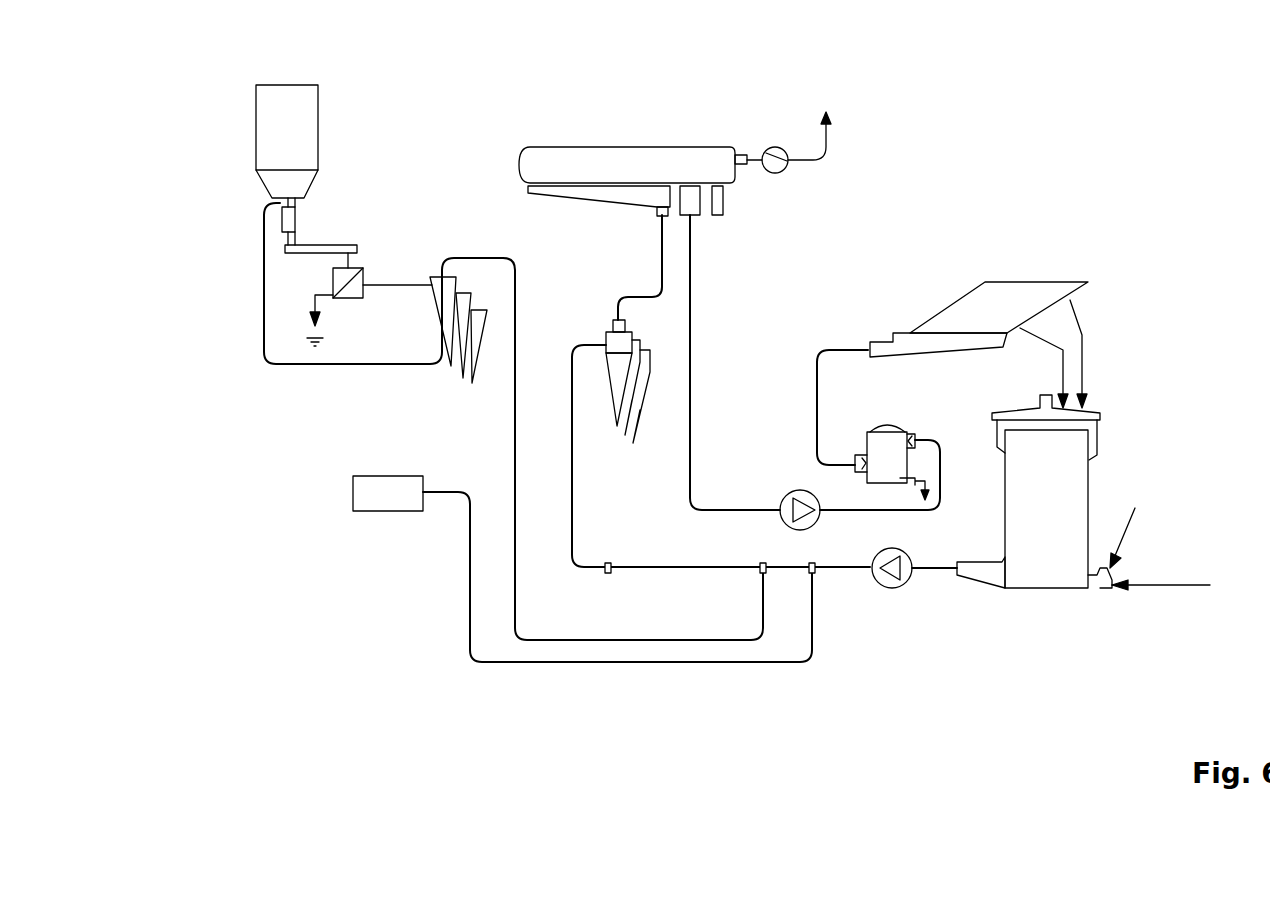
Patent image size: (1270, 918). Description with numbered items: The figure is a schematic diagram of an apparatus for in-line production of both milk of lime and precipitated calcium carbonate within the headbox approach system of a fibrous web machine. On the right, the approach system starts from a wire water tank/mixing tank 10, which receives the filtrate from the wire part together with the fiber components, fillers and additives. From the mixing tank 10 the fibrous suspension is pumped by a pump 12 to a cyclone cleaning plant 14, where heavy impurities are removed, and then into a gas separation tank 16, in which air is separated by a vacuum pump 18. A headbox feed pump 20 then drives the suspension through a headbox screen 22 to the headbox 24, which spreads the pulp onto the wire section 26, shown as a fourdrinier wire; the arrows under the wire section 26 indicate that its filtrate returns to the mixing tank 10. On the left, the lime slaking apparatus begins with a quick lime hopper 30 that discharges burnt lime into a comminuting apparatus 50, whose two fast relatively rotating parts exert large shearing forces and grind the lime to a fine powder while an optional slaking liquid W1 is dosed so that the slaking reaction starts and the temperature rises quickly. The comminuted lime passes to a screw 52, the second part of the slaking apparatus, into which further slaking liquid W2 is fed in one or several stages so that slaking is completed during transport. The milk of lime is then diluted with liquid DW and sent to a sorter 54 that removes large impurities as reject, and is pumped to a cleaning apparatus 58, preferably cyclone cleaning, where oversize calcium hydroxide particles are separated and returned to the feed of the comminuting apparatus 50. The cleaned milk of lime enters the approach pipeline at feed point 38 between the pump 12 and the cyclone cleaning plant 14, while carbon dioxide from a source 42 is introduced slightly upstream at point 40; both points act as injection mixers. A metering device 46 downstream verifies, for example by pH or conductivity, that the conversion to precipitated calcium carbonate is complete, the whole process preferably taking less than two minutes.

The wire water tank/mixing tank 10 is at (1048, 544).
The pump 12 is at (893, 577).
The cyclone cleaning plant 14 is at (616, 343).
The gas separation tank 16 is at (572, 172).
The vacuum pump 18 is at (770, 168).
The headbox feed pump 20 is at (792, 508).
The headbox screen 22 is at (880, 455).
The headbox 24 is at (923, 340).
The wire section 26 is at (990, 310).
The quick lime hopper 30 is at (274, 141).
The milk of lime feed point 38 is at (762, 575).
The carbon dioxide introduction point 40 is at (811, 575).
The carbon dioxide source 42 is at (374, 505).
The metering device 46 is at (606, 574).
The comminuting apparatus 50 is at (282, 220).
The screw 52 is at (313, 250).
The sorter 54 is at (343, 283).
The cleaning apparatus 58 is at (447, 290).
The slaking liquid W1 is at (300, 210).
The slaking liquid W2 is at (305, 240).
The dilution liquid DW is at (358, 262).